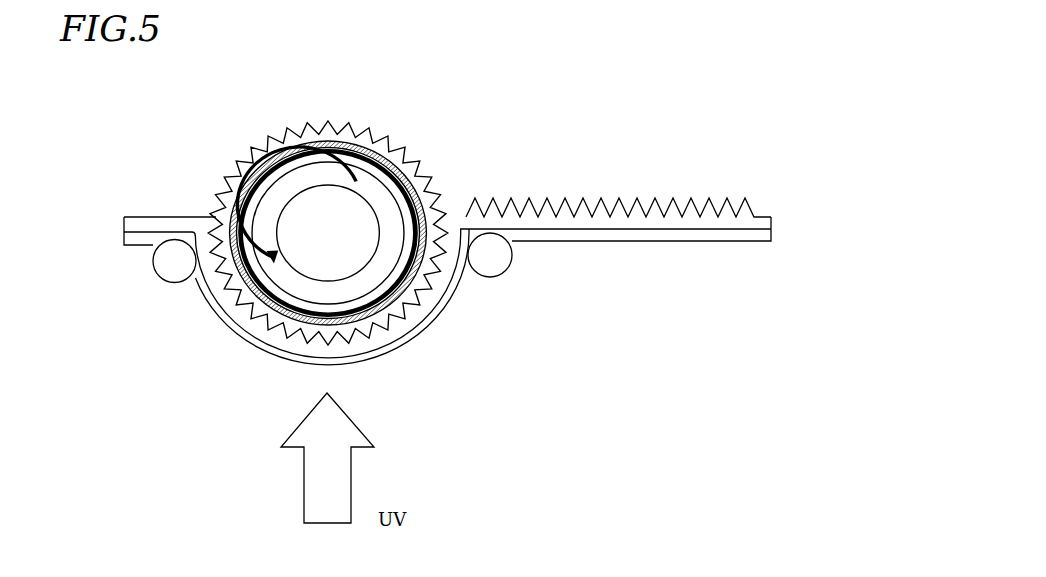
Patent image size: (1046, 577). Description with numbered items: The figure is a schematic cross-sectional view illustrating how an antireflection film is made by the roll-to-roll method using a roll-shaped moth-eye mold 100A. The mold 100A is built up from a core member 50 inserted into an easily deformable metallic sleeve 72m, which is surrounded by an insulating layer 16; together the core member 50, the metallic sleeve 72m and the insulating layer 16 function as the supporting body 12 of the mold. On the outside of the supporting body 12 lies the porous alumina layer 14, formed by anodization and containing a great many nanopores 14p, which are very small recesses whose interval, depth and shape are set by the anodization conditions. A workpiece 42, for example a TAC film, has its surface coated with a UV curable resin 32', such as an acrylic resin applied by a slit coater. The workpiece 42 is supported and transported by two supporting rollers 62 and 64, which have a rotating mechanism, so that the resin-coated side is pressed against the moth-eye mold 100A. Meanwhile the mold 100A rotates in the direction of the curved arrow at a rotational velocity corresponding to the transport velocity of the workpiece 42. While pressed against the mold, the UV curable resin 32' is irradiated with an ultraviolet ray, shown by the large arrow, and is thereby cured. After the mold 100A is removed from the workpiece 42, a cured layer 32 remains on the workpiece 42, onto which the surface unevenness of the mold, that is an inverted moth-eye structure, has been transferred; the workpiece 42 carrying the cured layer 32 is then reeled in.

The moth-eye mold 100A is at (517, 75).
The supporting body 12 is at (548, 115).
The porous alumina layer 14 is at (357, 120).
The nanopores 14p is at (320, 110).
The insulating layer 16 is at (398, 160).
The metallic sleeve 72m is at (415, 193).
The core member 50 is at (390, 227).
The cured layer 32 is at (618, 166).
The UV curable resin 32' is at (170, 179).
The workpiece 42 is at (127, 239).
The supporting roller 62 is at (168, 270).
The supporting roller 64 is at (503, 262).